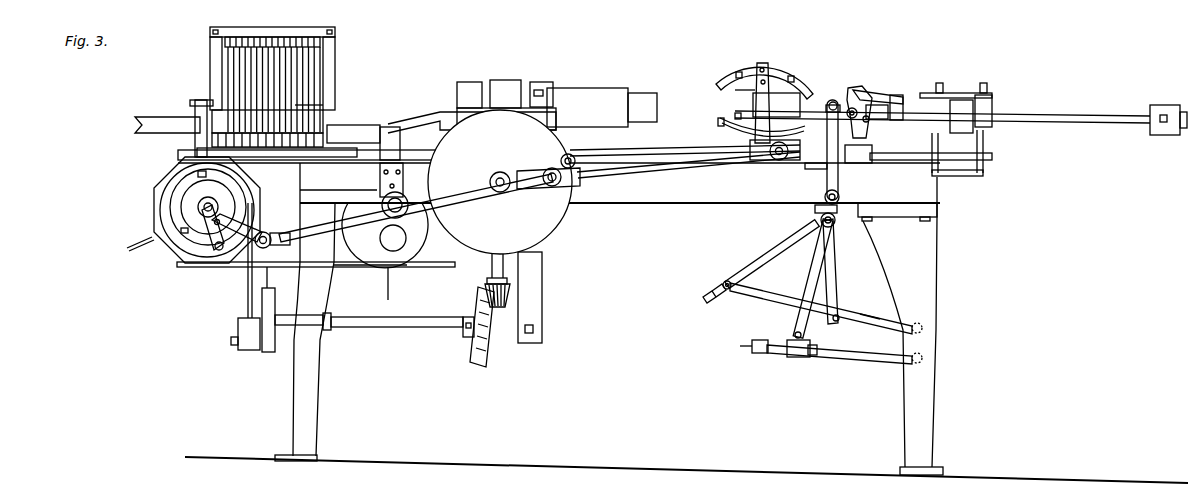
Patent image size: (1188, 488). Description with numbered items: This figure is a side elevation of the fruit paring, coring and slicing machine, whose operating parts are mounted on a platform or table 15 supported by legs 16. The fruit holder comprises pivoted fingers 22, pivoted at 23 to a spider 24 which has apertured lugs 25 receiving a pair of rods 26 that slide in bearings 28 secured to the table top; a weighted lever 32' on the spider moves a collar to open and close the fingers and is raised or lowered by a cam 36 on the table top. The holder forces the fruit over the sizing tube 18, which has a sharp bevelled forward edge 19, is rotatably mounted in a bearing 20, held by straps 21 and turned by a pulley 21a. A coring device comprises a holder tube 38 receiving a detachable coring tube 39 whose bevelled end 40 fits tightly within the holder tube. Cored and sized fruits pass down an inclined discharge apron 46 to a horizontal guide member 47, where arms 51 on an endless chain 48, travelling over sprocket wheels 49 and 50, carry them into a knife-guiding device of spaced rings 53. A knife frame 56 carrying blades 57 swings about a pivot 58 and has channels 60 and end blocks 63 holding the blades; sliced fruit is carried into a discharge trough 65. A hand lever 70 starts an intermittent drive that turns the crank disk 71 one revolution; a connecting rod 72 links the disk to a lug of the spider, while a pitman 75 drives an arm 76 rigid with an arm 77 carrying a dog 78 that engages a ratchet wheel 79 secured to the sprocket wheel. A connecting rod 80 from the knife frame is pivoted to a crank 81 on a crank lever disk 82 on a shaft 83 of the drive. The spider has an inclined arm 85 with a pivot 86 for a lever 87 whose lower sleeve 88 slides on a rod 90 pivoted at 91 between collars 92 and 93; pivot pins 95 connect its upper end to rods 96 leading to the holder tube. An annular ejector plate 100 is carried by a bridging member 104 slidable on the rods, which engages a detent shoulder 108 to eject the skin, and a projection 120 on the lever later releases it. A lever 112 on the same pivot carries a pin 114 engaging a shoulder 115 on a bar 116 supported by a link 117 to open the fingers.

The platform or table 15 is at (373, 161).
The legs 16 is at (609, 319).
The sizing tube or horn 18 is at (587, 107).
The bevelled forward edge 19 is at (658, 97).
The bearing or rest 20 is at (545, 112).
The straps or caps 21 is at (543, 83).
The pulley 21a is at (507, 79).
The pivoted fingers 22 is at (783, 89).
The pivot 23 is at (763, 63).
The spider 24 is at (755, 87).
The apertured sleeves or lugs 25 is at (786, 162).
The rods 26 is at (657, 148).
The bearings 28 is at (873, 155).
The weighted lever 32' is at (829, 91).
The cam 36 is at (822, 170).
The holder tube 38 is at (1108, 112).
The coring tube 39 is at (868, 121).
The bevelled end 40 is at (963, 132).
The inclined discharge apron 46 is at (418, 117).
The horizontal guide member 47 is at (361, 125).
The endless chain 48 is at (360, 270).
The sprocket wheel 49 is at (153, 212).
The sprocket wheel 50 is at (418, 245).
The projecting parts or arms 51 is at (145, 246).
The spaced rings 53 is at (233, 117).
The knife frame 56 is at (335, 62).
The blades 57 is at (237, 70).
The shaft or pivot 58 is at (307, 103).
The channels 60 is at (262, 20).
The end blocks 63 is at (292, 36).
The discharge trough 65 is at (155, 117).
The hand lever 70 is at (839, 184).
The crank wheel or disk 71 is at (504, 182).
The pitman or connecting rod 72 is at (646, 166).
The pitman 75 is at (460, 196).
The arm 76 is at (267, 231).
The arm 77 is at (213, 242).
The dog or ratchet 78 is at (247, 218).
The ratchet wheel or disk 79 is at (177, 193).
The connecting rod 80 is at (247, 292).
The crank 81 is at (236, 342).
The crank lever disk 82 is at (267, 355).
The shaft 83 is at (367, 328).
The inclined arm 85 is at (815, 219).
The pivot 86 is at (836, 223).
The lever 87 is at (812, 276).
The sleeve 88 is at (798, 359).
The bar or rod 90 is at (880, 365).
The pivot 91 is at (923, 358).
The collar 92 is at (812, 357).
The collar 93 is at (762, 355).
The pivot pins 95 is at (878, 107).
The rods 96 is at (1048, 112).
The ejector plate or disk 100 is at (735, 114).
The bridging or connecting member 104 is at (939, 93).
The shoulder 108 is at (873, 91).
The lever 112 is at (832, 273).
The pin or rod 114 is at (843, 317).
The notch or shoulder 115 is at (767, 297).
The rod or bar 116 is at (865, 324).
The link 117 is at (762, 264).
The projection 120 is at (854, 87).